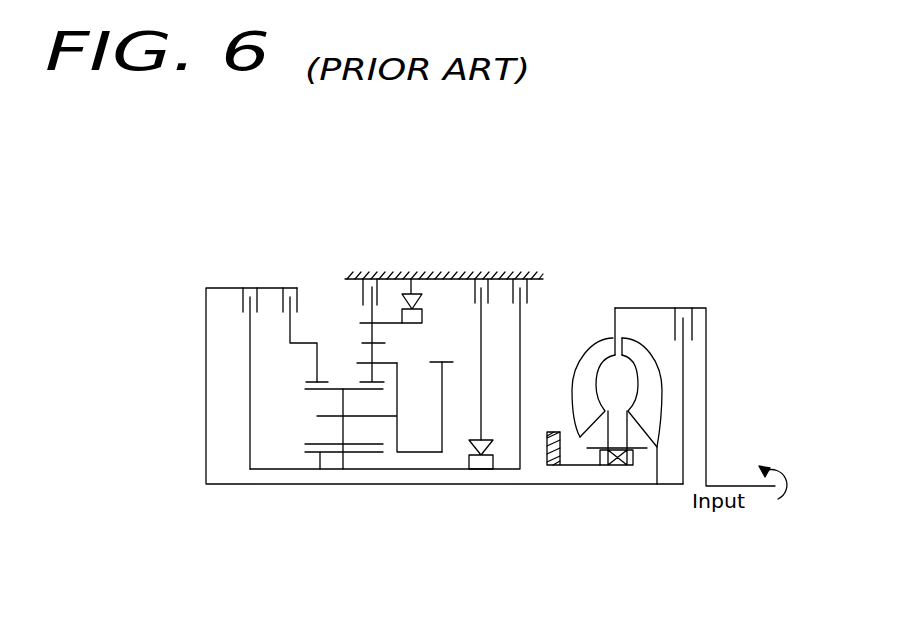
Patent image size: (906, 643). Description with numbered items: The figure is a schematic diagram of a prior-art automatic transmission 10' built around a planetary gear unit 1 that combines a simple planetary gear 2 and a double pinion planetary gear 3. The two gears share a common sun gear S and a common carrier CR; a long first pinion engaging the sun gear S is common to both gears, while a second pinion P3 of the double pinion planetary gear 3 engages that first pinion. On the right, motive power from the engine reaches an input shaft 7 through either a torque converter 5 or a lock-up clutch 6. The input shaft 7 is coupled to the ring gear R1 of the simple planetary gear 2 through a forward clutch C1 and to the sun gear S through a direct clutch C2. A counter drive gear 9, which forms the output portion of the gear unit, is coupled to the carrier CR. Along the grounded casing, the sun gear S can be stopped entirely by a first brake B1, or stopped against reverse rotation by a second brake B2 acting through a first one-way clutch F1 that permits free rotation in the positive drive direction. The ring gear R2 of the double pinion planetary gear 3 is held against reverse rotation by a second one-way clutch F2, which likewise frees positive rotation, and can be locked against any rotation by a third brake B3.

The planetary gear unit 1 is at (342, 208).
The simple planetary gear 2 is at (316, 310).
The double pinion planetary gear 3 is at (352, 308).
The torque converter 5 is at (601, 336).
The lock-up clutch 6 is at (683, 308).
The input shaft 7 is at (578, 486).
The counter drive gear 9 is at (444, 362).
The automatic transmission 10' is at (399, 329).
The forward clutch C1 is at (298, 319).
The direct clutch C2 is at (251, 363).
The first brake B1 is at (521, 270).
The second brake B2 is at (478, 338).
The third brake B3 is at (371, 271).
The first one-way clutch F1 is at (479, 478).
The second one-way clutch F2 is at (417, 280).
The ring gear R1 is at (312, 381).
The ring gear R2 is at (370, 342).
The second pinion P3 is at (373, 358).
The sun gear S is at (320, 471).
The carrier CR is at (397, 432).